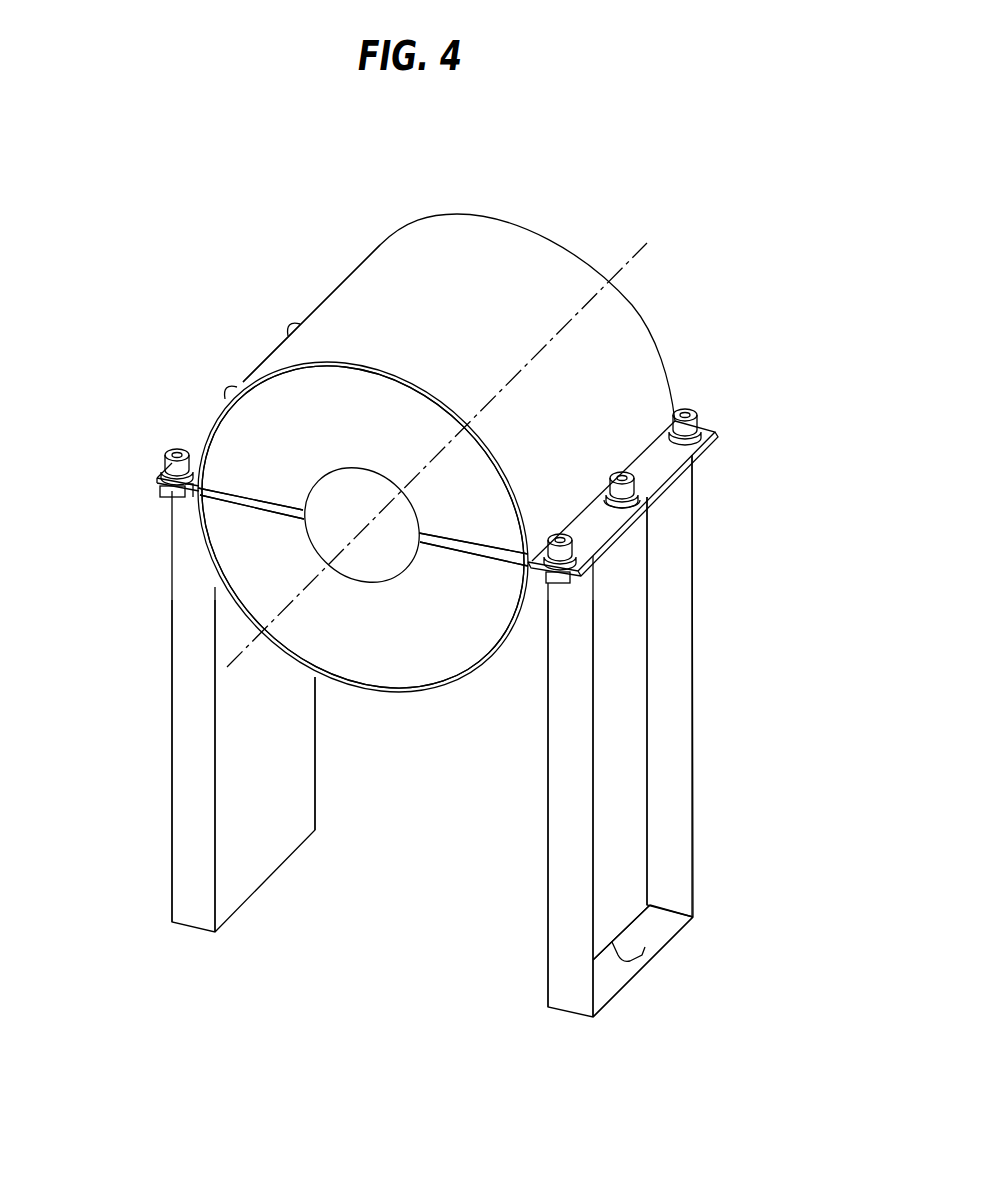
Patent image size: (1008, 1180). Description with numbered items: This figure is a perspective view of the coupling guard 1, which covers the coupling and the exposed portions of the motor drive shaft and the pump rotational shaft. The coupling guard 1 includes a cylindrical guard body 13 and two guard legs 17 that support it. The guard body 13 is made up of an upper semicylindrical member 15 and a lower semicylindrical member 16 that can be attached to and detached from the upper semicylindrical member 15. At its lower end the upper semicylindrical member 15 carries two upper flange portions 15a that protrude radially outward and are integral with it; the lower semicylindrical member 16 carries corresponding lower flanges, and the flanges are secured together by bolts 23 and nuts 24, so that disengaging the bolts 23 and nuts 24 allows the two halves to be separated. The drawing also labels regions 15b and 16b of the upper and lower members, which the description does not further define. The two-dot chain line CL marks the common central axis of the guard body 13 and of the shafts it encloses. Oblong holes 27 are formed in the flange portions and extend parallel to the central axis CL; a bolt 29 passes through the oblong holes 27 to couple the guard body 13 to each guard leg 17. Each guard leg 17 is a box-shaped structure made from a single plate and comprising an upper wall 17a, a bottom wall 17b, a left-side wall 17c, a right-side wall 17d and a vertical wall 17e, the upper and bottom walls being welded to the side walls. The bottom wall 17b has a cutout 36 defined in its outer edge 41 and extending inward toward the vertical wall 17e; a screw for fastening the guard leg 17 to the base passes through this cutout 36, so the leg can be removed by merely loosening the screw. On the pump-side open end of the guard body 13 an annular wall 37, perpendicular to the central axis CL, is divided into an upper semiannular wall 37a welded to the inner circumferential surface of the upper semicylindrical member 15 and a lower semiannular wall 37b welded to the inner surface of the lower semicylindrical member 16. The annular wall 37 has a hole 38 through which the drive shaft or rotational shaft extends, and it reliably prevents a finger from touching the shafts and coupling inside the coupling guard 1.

The coupling guard 1 is at (350, 193).
The guard body 13 is at (327, 284).
The upper semicylindrical member 15 is at (440, 233).
The upper flange portions 15a is at (193, 437).
The front edge of upper half shell 15b is at (333, 360).
The lower semicylindrical member 16 is at (532, 622).
The front edge of lower half 16b is at (357, 692).
The guard legs 17 is at (432, 743).
The upper wall 17a is at (665, 483).
The bottom wall 17b is at (650, 937).
The left-side wall 17c is at (182, 790).
The right-side wall 17d is at (673, 772).
The vertical wall 17e is at (640, 688).
The bolts 23 is at (290, 326).
The nuts 24 is at (165, 493).
The oblong holes 27 is at (612, 508).
The bolt 29 is at (228, 390).
The cutout 36 is at (637, 963).
The annular wall 37 is at (454, 450).
The upper semiannular wall 37a is at (400, 392).
The lower semiannular wall 37b is at (415, 677).
The hole 38 is at (323, 478).
The outer edge 41 is at (681, 931).
The central axis CL is at (624, 262).